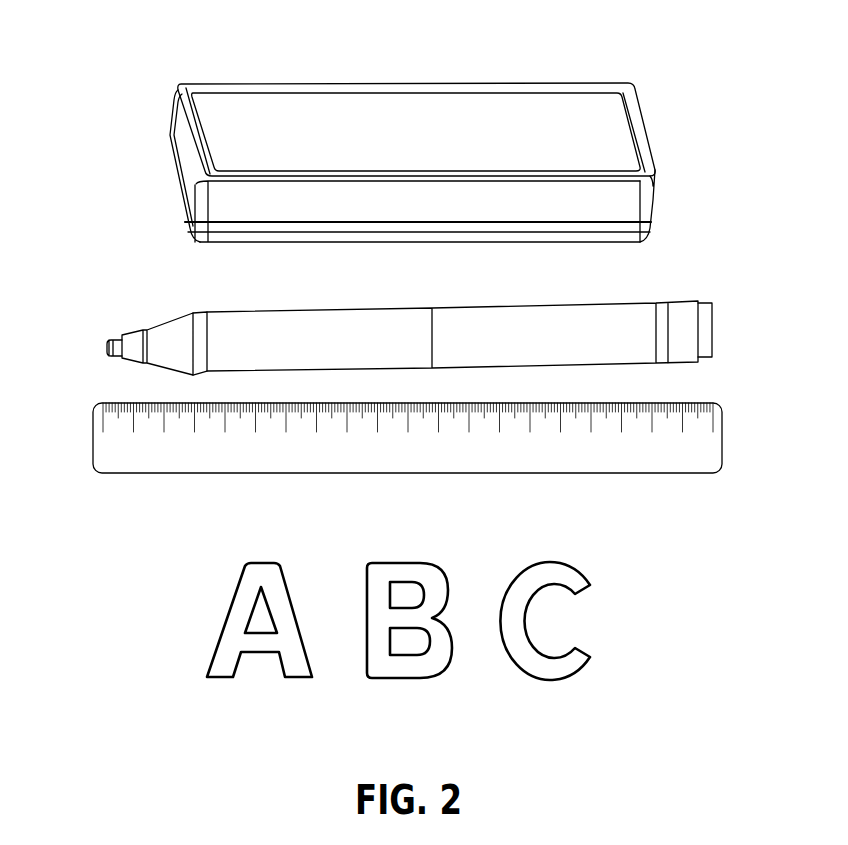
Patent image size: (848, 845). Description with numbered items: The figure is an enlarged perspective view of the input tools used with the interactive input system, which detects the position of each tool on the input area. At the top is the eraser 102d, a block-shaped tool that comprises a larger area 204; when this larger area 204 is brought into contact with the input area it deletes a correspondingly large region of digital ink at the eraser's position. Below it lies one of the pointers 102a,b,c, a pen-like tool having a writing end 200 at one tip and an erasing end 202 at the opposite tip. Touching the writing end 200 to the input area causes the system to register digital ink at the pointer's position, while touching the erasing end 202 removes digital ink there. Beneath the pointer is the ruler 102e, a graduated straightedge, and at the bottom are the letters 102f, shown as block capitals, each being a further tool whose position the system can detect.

The eraser 102d is at (462, 139).
The larger area 204 is at (650, 230).
The pointers 102a,b,c is at (436, 308).
The writing end 200 is at (110, 340).
The erasing end 202 is at (707, 350).
The ruler 102e is at (88, 430).
The letters 102f is at (217, 640).